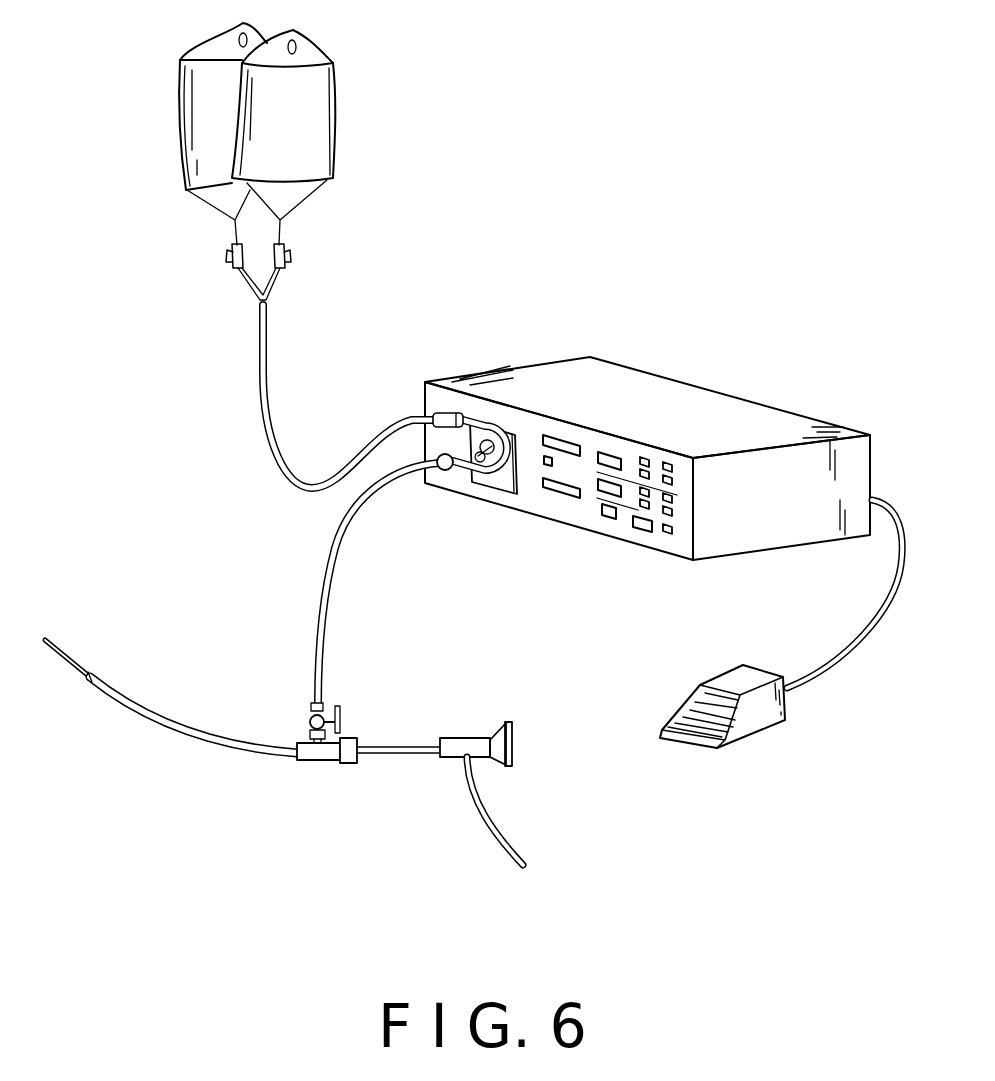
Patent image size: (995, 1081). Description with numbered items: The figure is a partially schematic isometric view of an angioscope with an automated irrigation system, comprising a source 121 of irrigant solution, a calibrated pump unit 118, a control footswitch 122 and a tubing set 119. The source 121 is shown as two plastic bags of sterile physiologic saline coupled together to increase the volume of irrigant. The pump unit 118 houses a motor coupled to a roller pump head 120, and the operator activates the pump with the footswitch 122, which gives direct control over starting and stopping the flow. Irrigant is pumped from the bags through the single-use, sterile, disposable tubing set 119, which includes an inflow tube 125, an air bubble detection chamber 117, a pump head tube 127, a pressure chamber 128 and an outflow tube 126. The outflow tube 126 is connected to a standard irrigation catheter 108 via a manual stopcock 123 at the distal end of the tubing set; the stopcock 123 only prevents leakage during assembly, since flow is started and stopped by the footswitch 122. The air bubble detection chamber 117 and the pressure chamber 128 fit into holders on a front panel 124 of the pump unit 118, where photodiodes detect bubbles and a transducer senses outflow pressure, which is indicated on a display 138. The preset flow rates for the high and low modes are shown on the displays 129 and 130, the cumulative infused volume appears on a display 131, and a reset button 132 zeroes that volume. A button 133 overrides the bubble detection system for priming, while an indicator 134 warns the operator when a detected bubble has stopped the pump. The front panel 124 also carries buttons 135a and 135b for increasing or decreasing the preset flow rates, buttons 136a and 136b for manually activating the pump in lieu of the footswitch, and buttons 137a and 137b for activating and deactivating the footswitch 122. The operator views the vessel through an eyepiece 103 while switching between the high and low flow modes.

The eyepiece 103 is at (510, 732).
The irrigation catheter 108 is at (167, 718).
The air bubble detection chamber 117 is at (442, 382).
The pump unit 118 is at (502, 365).
The tubing set 119 is at (312, 490).
The pump head 120 is at (482, 495).
The source of irrigant solution 121 is at (220, 110).
The control footswitch 122 is at (756, 735).
The stopcock 123 is at (312, 720).
The front panel 124 is at (680, 557).
The inflow tube 125 is at (259, 392).
The outflow tube 126 is at (316, 603).
The pump head tube 127 is at (482, 424).
The pressure chamber 128 is at (437, 481).
The front panel display 129 is at (614, 480).
The front panel display 130 is at (606, 452).
The display 131 is at (557, 435).
The reset button 132 is at (548, 464).
The button 133 is at (603, 516).
The indicator 134 is at (655, 530).
The button 135a is at (645, 458).
The button 135b is at (645, 503).
The button 136a is at (668, 463).
The button 136b is at (673, 498).
The button 137a is at (673, 479).
The button 137b is at (673, 512).
The display 138 is at (553, 495).